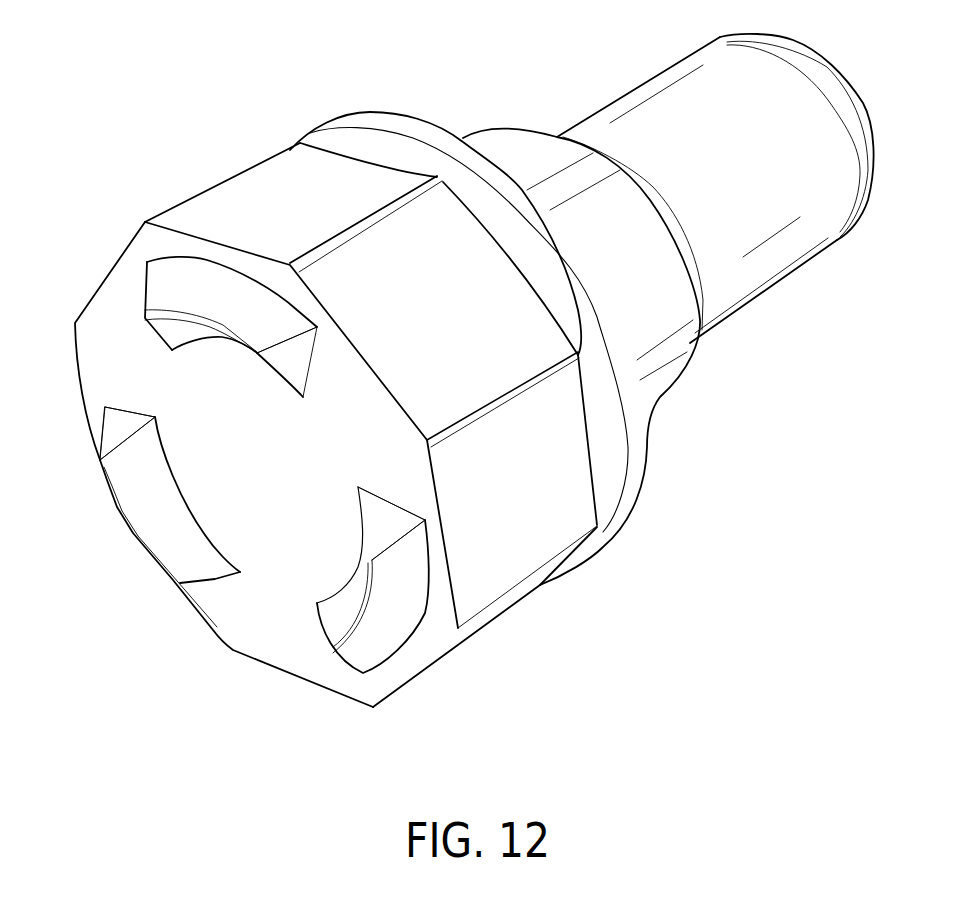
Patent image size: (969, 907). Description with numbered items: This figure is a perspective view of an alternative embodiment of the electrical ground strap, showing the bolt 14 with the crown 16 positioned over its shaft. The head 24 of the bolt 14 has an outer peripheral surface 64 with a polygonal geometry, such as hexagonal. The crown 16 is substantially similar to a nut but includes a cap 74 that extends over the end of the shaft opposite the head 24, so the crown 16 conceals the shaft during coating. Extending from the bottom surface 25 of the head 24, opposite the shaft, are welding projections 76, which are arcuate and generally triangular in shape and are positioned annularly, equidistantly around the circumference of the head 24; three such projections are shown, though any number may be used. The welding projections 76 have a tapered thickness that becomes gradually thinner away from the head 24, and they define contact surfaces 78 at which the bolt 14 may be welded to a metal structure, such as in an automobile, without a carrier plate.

The bolt 14 is at (175, 160).
The crown 16 is at (770, 298).
The head 24 is at (225, 620).
The bottom surface 25 is at (284, 657).
The outer peripheral surface 64 is at (523, 503).
The cap 74 is at (863, 102).
The welding projections 76 is at (96, 462).
The contact surfaces 78 is at (222, 328).